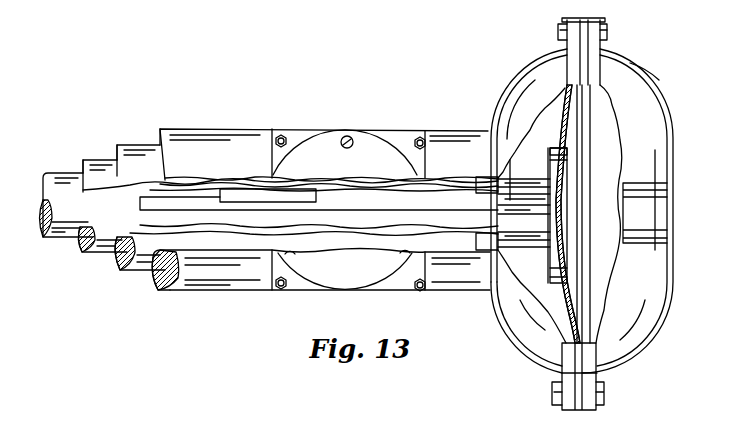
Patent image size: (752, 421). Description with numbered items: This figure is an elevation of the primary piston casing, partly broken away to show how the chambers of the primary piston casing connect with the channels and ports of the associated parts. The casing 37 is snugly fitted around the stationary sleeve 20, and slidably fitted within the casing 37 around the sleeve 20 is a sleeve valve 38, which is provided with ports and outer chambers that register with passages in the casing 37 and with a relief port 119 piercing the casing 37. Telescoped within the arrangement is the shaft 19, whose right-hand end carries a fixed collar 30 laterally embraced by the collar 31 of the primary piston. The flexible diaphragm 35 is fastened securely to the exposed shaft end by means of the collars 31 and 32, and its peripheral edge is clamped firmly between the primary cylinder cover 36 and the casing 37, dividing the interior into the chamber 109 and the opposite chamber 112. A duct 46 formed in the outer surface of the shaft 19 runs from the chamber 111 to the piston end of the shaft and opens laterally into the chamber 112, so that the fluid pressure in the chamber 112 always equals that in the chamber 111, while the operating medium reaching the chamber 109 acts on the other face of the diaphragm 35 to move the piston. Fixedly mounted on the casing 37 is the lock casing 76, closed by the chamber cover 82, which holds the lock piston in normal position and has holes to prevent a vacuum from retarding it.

The shaft 19 is at (68, 234).
The sleeve 20 is at (104, 250).
The sleeve valve 38 is at (146, 271).
The casing 37 is at (197, 290).
The chamber 111 is at (180, 207).
The casing 76 is at (305, 133).
The chamber cover 82 is at (366, 138).
The chamber 112 is at (538, 113).
The collar 31 is at (554, 150).
The fixed collar 30 is at (551, 174).
The relief port 119 is at (509, 188).
The duct 46 is at (506, 212).
The collar 32 is at (572, 196).
The chamber 109 is at (617, 142).
The primary cylinder cover 36 is at (623, 68).
The flexible diaphragm 35 is at (553, 316).